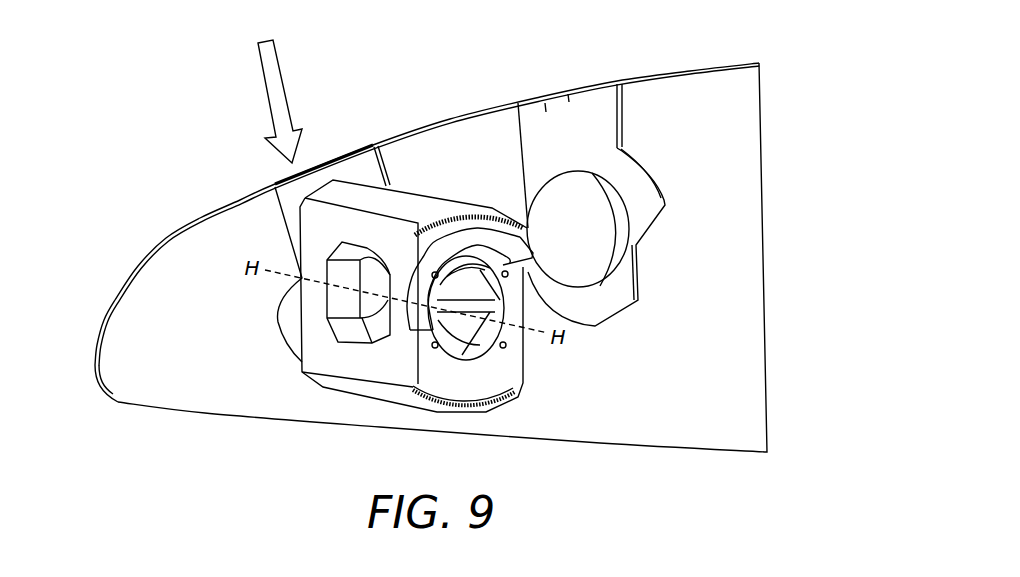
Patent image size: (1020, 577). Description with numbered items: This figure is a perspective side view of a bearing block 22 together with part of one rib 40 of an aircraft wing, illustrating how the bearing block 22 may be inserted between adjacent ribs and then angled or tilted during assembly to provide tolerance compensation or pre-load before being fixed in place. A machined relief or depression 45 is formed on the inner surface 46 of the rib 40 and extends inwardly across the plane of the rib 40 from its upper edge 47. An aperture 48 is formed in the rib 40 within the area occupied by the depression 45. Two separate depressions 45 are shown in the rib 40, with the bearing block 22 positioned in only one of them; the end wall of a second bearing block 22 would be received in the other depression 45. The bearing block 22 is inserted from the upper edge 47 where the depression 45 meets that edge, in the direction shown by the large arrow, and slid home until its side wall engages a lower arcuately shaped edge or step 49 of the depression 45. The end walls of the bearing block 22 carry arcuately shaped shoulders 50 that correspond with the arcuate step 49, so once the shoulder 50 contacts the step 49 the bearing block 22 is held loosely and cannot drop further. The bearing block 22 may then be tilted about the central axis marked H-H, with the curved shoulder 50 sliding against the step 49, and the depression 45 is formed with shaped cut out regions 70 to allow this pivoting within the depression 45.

The rib 40 is at (139, 250).
The upper edge 47 is at (448, 118).
The depression 45 is at (345, 163).
The step 49 is at (594, 327).
The inner surface 46 is at (673, 402).
The aperture 48 is at (564, 241).
The bearing block 22 is at (325, 402).
The cut out regions 70 is at (290, 216).
The shoulder 50 is at (484, 412).